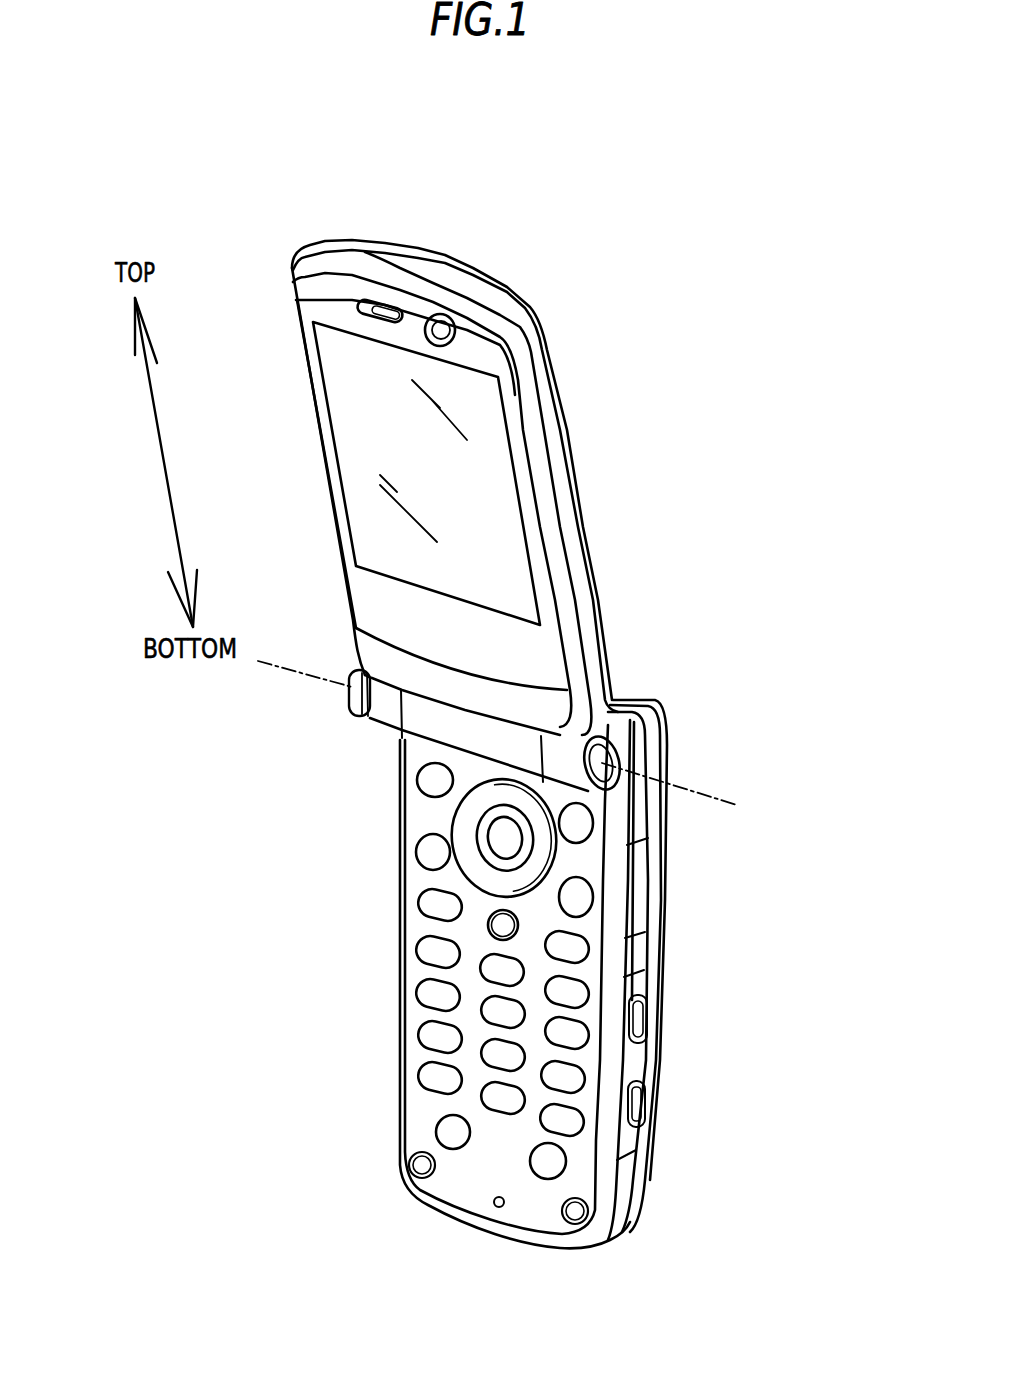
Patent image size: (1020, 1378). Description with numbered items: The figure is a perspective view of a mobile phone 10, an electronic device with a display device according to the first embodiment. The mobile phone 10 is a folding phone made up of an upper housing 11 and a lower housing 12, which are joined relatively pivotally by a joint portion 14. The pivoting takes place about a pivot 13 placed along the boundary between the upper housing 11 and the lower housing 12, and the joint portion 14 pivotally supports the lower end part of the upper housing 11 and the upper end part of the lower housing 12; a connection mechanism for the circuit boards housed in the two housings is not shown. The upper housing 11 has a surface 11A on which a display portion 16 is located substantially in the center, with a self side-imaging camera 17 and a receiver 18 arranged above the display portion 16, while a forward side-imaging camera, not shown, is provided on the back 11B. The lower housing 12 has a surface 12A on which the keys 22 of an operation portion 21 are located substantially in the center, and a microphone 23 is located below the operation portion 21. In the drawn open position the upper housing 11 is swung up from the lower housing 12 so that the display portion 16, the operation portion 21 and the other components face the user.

The mobile phone 10 is at (521, 727).
The upper housing 11 is at (499, 441).
The surface 11A is at (330, 480).
The back 11B is at (574, 463).
The lower housing 12 is at (531, 1003).
The surface 12A is at (442, 1015).
The pivot 13 is at (280, 668).
The joint portion 14 is at (500, 738).
The display portion 16 is at (355, 416).
The self side-imaging camera 17 is at (443, 316).
The receiver 18 is at (378, 300).
The operation portion 21 is at (390, 1041).
The keys 22 is at (417, 1077).
The microphone 23 is at (493, 1207).